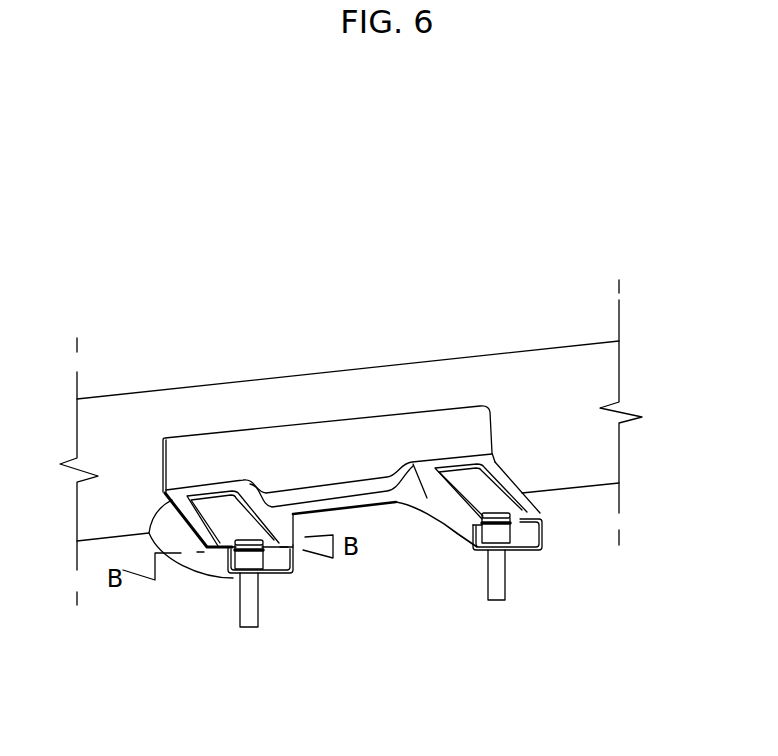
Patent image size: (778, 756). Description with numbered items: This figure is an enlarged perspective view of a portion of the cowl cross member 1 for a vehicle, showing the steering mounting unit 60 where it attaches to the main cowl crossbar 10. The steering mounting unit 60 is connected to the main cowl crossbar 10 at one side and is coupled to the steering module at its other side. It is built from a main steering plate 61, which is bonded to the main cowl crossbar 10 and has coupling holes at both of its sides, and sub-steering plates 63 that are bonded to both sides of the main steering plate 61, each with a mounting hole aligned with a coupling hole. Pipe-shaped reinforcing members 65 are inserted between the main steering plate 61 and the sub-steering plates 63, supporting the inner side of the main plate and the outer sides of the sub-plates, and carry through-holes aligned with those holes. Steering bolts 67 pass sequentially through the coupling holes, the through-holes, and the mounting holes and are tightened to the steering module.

The vehicle body assembly 1 is at (360, 183).
The main cowl crossbar 10 is at (421, 377).
The steering mounting unit 60 is at (344, 468).
The main steering plate 61 is at (465, 427).
The sub-steering plate 63 is at (300, 563).
The reinforcing member 65 is at (258, 560).
The steering bolt 67 is at (246, 607).